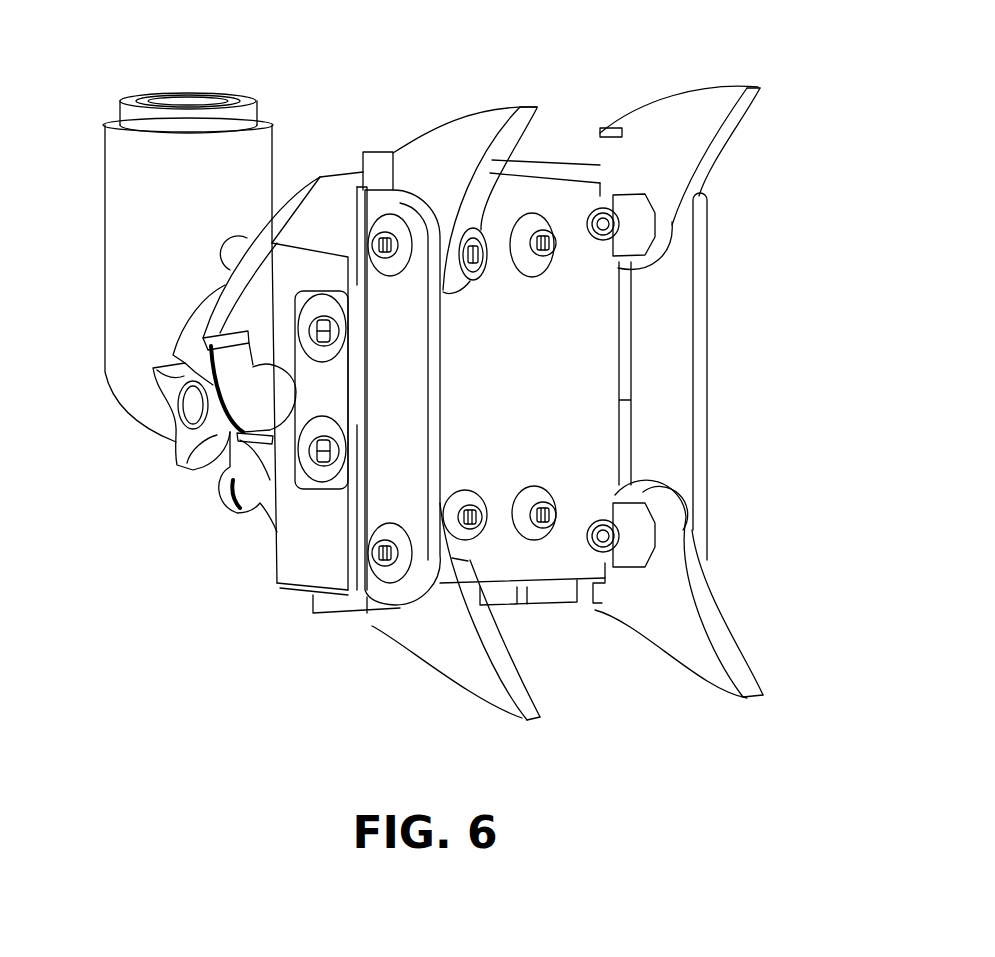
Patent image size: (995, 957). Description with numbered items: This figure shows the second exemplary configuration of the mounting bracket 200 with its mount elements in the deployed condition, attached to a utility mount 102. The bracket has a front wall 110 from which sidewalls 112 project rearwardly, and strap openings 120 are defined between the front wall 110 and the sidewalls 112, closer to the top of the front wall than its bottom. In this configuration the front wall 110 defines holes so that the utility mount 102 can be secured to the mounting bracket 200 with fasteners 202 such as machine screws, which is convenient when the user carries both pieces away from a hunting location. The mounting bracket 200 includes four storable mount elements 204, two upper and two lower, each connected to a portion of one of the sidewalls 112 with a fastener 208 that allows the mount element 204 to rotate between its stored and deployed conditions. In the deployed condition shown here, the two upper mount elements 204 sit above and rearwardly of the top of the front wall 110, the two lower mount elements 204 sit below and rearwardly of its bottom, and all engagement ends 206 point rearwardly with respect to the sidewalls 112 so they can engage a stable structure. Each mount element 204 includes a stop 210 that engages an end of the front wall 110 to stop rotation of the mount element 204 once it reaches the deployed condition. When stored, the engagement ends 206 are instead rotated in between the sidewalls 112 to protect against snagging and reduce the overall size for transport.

The utility mount 102 is at (175, 475).
The front wall 110 is at (580, 341).
The sidewalls 112 is at (417, 400).
The strap openings 120 is at (273, 585).
The mounting bracket 200 is at (716, 222).
The fasteners 202 is at (473, 237).
The mount elements 204 is at (672, 132).
The engagement ends 206 is at (515, 108).
The fastener 208 is at (390, 205).
The stop 210 is at (363, 170).